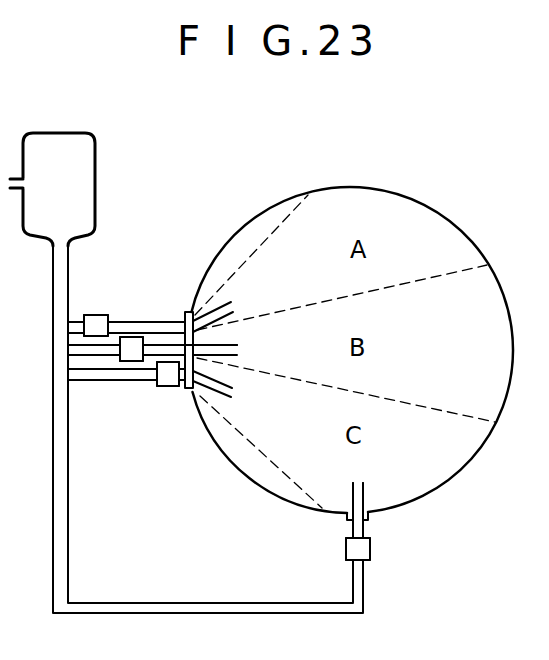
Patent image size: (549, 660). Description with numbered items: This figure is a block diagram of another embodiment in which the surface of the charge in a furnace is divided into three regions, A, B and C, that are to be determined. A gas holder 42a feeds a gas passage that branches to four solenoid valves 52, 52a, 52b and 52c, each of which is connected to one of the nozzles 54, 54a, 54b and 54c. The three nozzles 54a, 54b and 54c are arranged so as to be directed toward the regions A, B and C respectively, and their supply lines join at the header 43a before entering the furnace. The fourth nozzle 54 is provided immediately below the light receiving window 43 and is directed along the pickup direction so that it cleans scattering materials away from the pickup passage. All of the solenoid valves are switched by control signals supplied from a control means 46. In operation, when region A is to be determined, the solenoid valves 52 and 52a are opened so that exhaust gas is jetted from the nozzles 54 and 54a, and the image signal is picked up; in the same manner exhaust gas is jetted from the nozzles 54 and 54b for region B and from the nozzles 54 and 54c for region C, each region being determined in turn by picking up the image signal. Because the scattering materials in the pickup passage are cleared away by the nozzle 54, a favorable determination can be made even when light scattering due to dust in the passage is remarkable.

The gas holder 42a is at (88, 177).
The distribution header 43a is at (186, 312).
The light receiving window 43 is at (369, 518).
The control means 46 is at (95, 313).
The solenoid valve 52a is at (96, 337).
The solenoid valve 52b is at (132, 362).
The solenoid valve 52c is at (168, 386).
The solenoid valve 52 is at (371, 551).
The nozzle 54a is at (228, 314).
The nozzle 54b is at (238, 355).
The nozzle 54c is at (226, 392).
The nozzle 54 is at (352, 490).